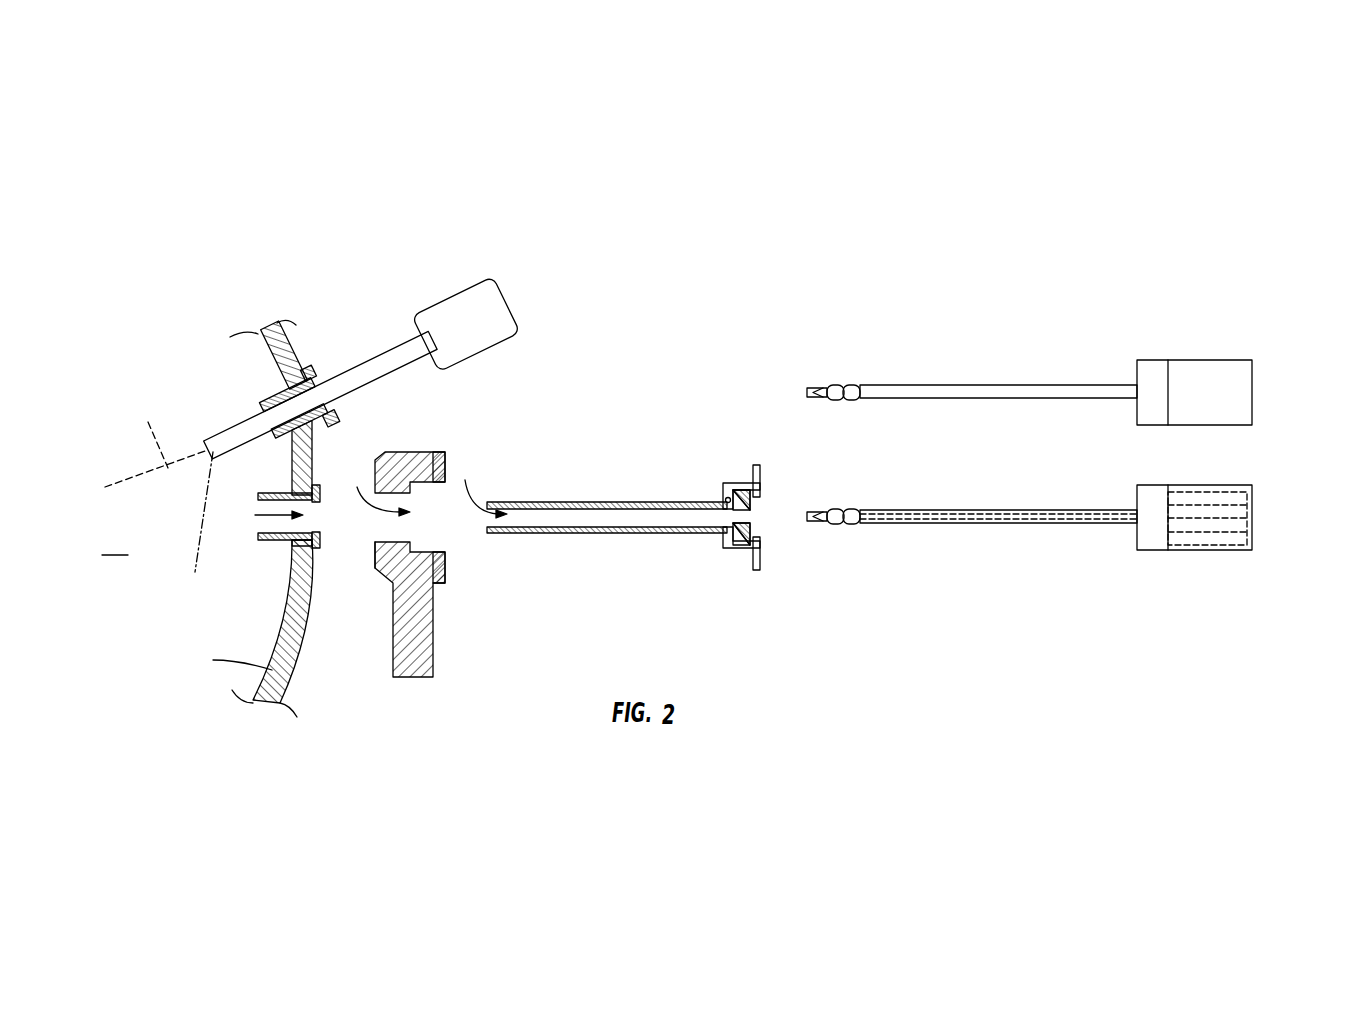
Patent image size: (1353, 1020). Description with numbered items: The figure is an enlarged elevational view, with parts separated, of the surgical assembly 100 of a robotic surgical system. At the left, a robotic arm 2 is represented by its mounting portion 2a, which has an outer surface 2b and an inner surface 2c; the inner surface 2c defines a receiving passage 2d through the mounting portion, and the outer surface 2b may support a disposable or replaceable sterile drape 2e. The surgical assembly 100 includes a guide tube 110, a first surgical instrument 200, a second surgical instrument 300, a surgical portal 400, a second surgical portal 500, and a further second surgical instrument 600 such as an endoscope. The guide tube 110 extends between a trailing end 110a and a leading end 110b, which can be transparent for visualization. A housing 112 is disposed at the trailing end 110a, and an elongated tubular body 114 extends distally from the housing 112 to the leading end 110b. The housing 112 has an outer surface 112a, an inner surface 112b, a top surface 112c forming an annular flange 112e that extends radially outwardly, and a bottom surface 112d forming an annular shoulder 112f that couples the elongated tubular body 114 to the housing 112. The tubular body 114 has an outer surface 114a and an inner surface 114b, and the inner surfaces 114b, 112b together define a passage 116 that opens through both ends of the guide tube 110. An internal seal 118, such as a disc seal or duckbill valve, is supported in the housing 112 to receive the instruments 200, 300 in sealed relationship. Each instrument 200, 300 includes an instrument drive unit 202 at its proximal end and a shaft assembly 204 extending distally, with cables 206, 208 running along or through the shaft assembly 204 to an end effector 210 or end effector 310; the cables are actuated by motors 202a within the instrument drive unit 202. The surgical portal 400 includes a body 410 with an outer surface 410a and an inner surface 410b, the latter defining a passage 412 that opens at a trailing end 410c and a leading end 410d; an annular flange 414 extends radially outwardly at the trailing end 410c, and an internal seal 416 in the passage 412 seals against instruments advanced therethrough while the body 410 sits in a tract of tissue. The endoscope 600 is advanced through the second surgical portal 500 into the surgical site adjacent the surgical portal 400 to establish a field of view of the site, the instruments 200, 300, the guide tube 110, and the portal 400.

The surgical assembly 100 is at (763, 262).
The further second surgical instrument 600 is at (492, 272).
The second surgical portal 500 is at (307, 379).
The surgical portal 400 is at (268, 553).
The body 410 is at (281, 493).
The outer surface 410a is at (285, 543).
The inner surface 410b is at (258, 537).
The trailing end 410c is at (317, 550).
The leading end 410d is at (258, 497).
The passage 412 is at (260, 517).
The annular flange 414 is at (319, 485).
The internal seal 416 is at (313, 503).
The robotic arm 2 is at (445, 652).
The mounting portion 2a is at (415, 452).
The outer surface 2b is at (393, 630).
The inner surface 2c is at (377, 541).
The receiving passage 2d is at (378, 484).
The sterile drape 2e is at (446, 567).
The guide tube 110 is at (633, 492).
The trailing end 110a is at (759, 558).
The leading end 110b is at (489, 503).
The housing 112 is at (734, 556).
The outer surface 112a is at (738, 489).
The inner surface 112b is at (726, 494).
The top surface 112c is at (761, 484).
The bottom surface 112d is at (722, 539).
The annular flange 112e is at (757, 572).
The annular shoulder 112f is at (725, 500).
The elongated tubular body 114 is at (563, 543).
The outer surface 114a is at (612, 534).
The inner surface 114b is at (592, 500).
The passage 116 is at (481, 486).
The internal seal 118 is at (761, 496).
The first surgical instrument 200 is at (982, 535).
The instrument drive unit 202 is at (1195, 360).
The motors 202a is at (1247, 517).
The shaft assembly 204 is at (1057, 385).
The cable 206 is at (942, 523).
The cable 208 is at (917, 512).
The end effector 210 is at (825, 523).
The second surgical instrument 300 is at (982, 410).
The end effector 310 is at (842, 385).